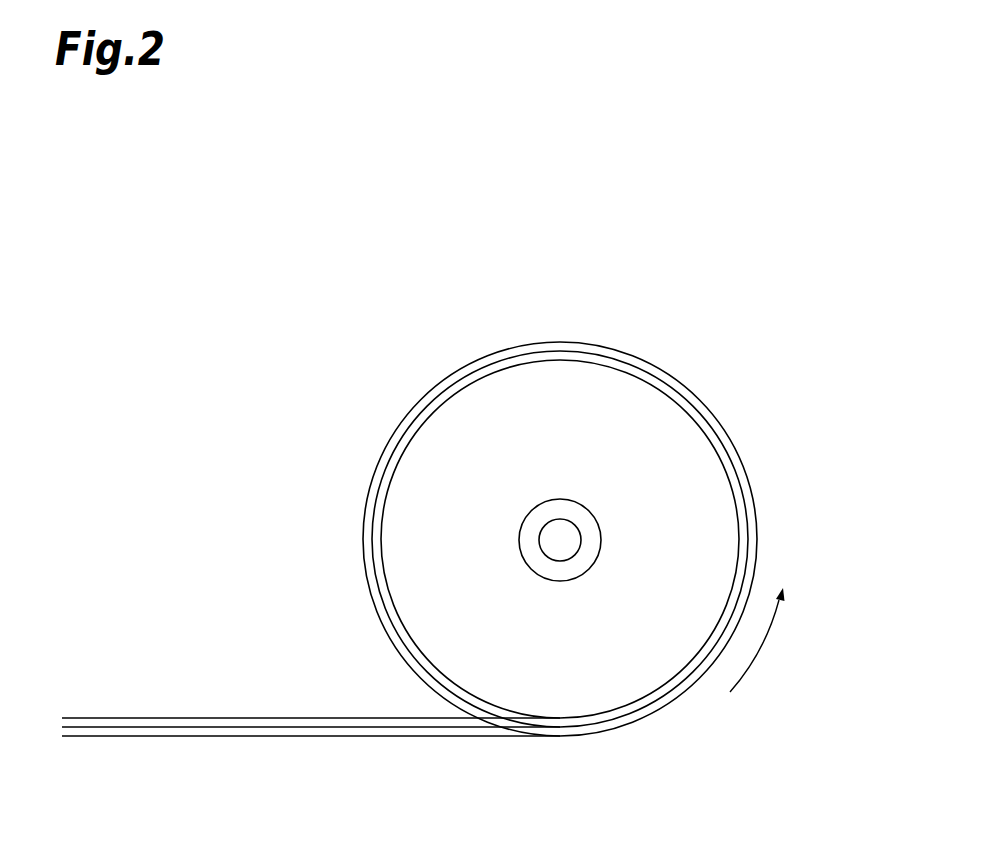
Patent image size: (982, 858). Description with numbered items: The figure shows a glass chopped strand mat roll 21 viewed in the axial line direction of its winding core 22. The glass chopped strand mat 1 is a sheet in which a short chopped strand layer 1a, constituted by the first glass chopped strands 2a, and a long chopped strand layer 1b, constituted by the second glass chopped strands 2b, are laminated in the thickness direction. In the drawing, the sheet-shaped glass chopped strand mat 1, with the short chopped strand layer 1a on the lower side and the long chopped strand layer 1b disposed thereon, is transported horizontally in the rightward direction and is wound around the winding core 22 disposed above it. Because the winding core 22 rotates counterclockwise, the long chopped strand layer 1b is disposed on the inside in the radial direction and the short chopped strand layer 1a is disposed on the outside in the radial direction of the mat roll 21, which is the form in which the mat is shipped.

The glass chopped strand mat 1 is at (107, 695).
The short chopped strand layer 1a is at (470, 576).
The long chopped strand layer 1b is at (402, 514).
The first glass chopped strands 2a is at (739, 457).
The second glass chopped strands 2b is at (703, 433).
The glass chopped strand mat roll 21 is at (416, 346).
The winding core 22 is at (582, 573).